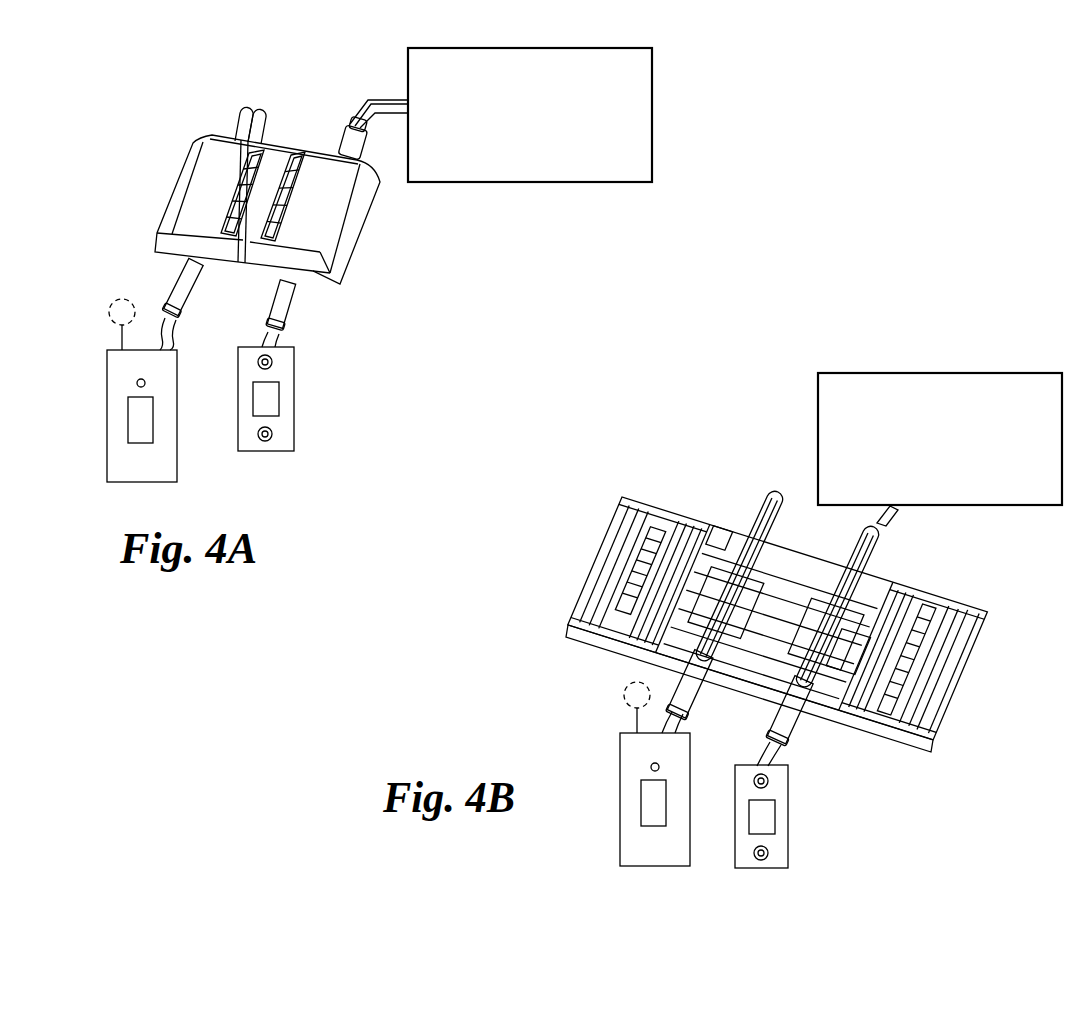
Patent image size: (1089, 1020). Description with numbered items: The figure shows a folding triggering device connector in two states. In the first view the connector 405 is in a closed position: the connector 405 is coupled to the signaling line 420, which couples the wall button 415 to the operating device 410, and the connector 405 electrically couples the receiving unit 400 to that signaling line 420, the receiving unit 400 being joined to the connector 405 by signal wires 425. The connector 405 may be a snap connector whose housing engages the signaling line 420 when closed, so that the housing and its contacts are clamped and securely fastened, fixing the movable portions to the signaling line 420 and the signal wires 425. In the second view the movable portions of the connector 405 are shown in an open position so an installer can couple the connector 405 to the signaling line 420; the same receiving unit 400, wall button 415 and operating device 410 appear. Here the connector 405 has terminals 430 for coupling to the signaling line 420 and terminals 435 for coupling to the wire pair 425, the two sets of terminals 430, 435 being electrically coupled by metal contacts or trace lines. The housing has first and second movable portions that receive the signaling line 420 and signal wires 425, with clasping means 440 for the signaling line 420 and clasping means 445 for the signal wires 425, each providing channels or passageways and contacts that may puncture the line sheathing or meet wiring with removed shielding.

In FIG. 4A, the receiving unit 400 is at (110, 468).
In FIG. 4B, the receiving unit 400 is at (622, 858).
In FIG. 4A, the connector 405 is at (362, 250).
In FIG. 4B, the connector 405 is at (967, 690).
In FIG. 4A, the operating device 410 is at (653, 143).
In FIG. 4B, the operating device 410 is at (1062, 446).
In FIG. 4A, the wall button 415 is at (297, 370).
In FIG. 4B, the wall button 415 is at (788, 778).
In FIG. 4A, the signaling line 420 is at (272, 300).
In FIG. 4B, the signaling line 420 is at (782, 717).
In FIG. 4A, the signal wires 425 is at (177, 292).
In FIG. 4B, the signal wires 425 is at (670, 692).
In FIG. 4B, the terminals 430 is at (900, 596).
In FIG. 4B, the terminals 435 is at (782, 555).
In FIG. 4B, the clasping means 440 is at (905, 564).
In FIG. 4B, the clasping means 445 is at (728, 502).